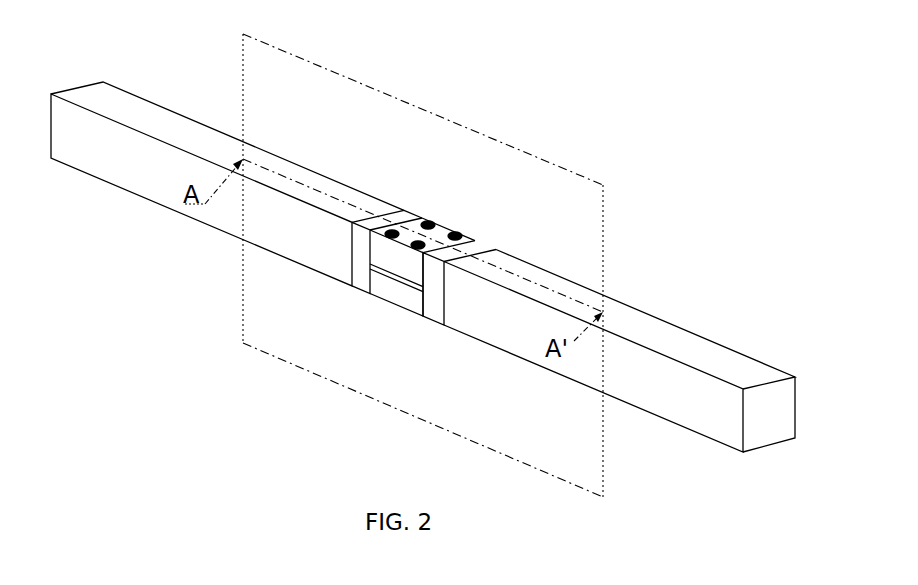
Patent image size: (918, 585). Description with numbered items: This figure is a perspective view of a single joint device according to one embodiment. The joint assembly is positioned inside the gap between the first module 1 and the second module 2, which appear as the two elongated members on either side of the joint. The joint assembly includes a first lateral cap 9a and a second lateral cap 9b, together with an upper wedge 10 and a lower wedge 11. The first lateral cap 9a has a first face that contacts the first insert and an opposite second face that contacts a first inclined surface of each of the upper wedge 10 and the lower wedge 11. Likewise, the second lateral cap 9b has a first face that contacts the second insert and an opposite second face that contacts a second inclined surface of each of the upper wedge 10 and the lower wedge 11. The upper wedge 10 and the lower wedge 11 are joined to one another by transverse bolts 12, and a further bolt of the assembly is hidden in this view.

The first module 1 is at (342, 195).
The second module 2 is at (541, 282).
The first lateral cap 9a is at (402, 210).
The second lateral cap 9b is at (480, 242).
The upper wedge 10 is at (433, 221).
The lower wedge 11 is at (397, 290).
The transverse bolts 12 is at (459, 233).